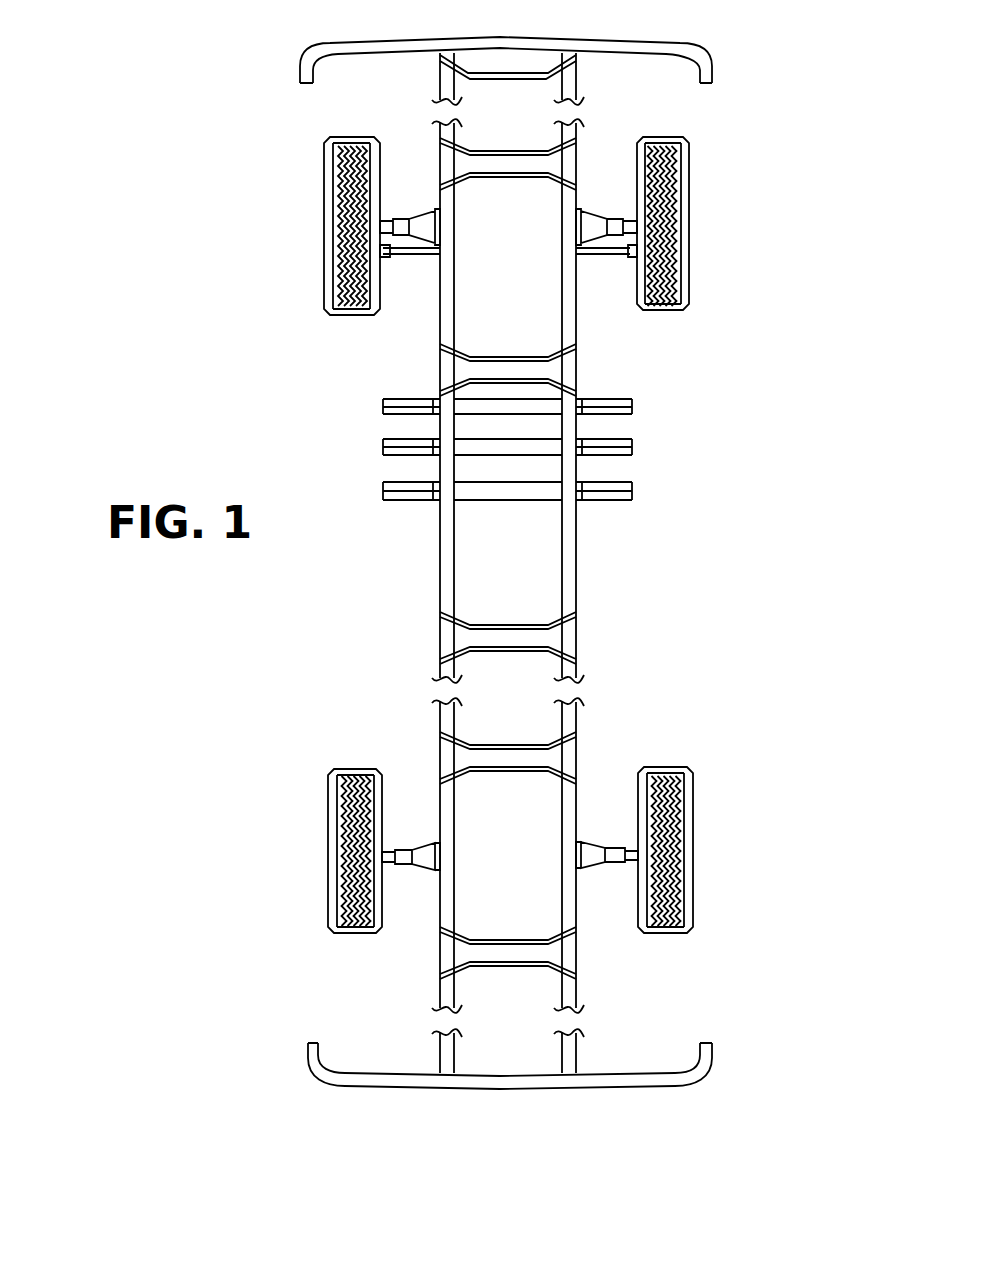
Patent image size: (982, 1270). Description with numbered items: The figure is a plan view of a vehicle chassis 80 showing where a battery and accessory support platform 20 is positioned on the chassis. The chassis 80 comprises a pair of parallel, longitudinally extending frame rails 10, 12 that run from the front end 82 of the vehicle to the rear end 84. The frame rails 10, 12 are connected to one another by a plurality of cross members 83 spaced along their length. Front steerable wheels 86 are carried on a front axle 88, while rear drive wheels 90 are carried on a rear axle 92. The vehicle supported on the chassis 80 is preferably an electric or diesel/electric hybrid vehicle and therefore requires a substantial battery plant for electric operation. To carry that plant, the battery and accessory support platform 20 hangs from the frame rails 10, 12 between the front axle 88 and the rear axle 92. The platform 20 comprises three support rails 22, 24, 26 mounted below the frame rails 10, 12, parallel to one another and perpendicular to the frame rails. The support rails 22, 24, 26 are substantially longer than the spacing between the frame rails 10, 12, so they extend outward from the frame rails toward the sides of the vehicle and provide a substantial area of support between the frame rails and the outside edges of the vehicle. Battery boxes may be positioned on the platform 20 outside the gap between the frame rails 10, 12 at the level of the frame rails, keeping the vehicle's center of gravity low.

The frame rail 10 is at (438, 308).
The frame rail 12 is at (568, 318).
The battery and accessory support platform 20 is at (727, 415).
The support rail 22 is at (633, 399).
The support rail 24 is at (633, 448).
The support rail 26 is at (633, 497).
The vehicle chassis 80 is at (222, 412).
The front end 82 is at (310, 112).
The cross members 83 is at (514, 156).
The rear end 84 is at (345, 1034).
The front steerable wheels 86 is at (684, 142).
The front axle 88 is at (610, 210).
The rear drive wheels 90 is at (357, 769).
The rear axle 92 is at (618, 843).